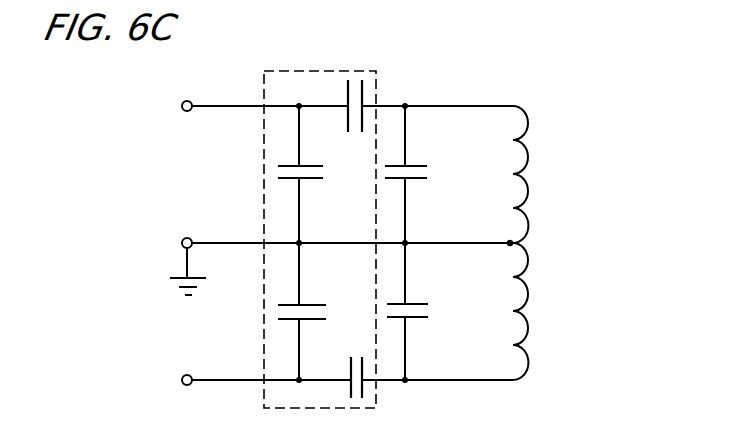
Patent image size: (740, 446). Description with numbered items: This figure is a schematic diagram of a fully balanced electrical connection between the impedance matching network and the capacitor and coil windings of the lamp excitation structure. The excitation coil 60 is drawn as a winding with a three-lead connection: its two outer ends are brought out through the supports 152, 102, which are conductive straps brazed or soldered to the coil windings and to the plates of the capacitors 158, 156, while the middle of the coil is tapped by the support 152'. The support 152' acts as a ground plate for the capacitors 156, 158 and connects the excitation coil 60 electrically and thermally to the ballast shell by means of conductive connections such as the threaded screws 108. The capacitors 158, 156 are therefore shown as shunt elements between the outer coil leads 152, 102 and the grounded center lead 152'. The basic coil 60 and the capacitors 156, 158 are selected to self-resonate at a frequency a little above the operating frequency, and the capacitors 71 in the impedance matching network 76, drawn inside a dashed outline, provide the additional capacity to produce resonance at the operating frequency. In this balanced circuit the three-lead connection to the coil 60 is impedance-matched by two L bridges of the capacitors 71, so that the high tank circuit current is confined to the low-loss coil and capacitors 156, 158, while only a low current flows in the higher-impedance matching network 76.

The impedance matching network 76 is at (261, 84).
The capacitors 71 is at (345, 123).
The support 152 is at (452, 85).
The capacitor 158 is at (417, 165).
The capacitor 156 is at (419, 318).
The threaded screws 108 is at (383, 246).
The support 152' is at (457, 217).
The excitation coil 60 is at (547, 172).
The support 102 is at (469, 382).